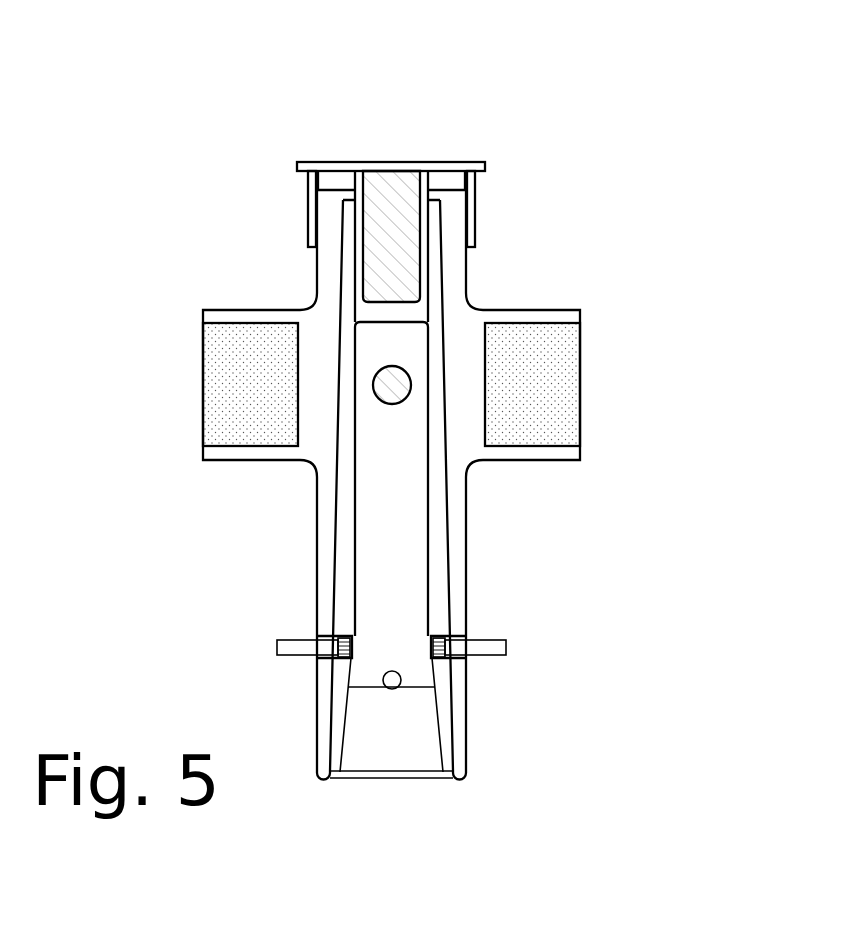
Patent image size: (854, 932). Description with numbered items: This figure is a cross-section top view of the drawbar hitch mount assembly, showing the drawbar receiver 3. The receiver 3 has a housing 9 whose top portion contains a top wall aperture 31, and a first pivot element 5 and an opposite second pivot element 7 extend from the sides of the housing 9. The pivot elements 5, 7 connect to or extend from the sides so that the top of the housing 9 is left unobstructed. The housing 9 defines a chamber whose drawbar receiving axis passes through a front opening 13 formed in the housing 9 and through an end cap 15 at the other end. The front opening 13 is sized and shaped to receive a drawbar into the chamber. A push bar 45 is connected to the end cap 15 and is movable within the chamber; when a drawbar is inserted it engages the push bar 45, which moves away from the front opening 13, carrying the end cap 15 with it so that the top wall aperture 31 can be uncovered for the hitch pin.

The drawbar receiver 3 is at (480, 609).
The first pivot element 5 is at (558, 310).
The second pivot element 7 is at (250, 310).
The housing 9 is at (467, 558).
The front opening 13 is at (392, 778).
The end cap 15 is at (338, 160).
The top wall aperture 31 is at (411, 386).
The push bar 45 is at (405, 185).